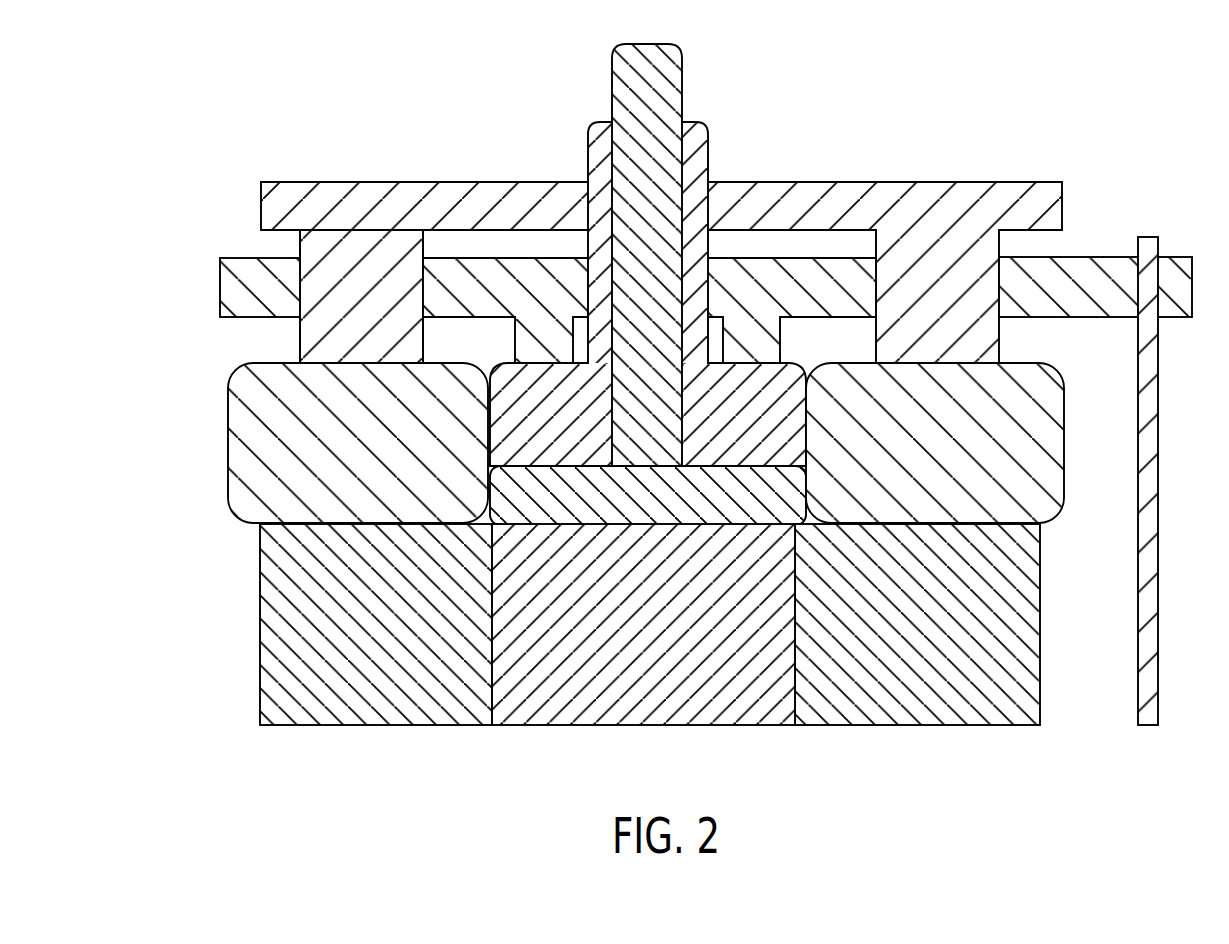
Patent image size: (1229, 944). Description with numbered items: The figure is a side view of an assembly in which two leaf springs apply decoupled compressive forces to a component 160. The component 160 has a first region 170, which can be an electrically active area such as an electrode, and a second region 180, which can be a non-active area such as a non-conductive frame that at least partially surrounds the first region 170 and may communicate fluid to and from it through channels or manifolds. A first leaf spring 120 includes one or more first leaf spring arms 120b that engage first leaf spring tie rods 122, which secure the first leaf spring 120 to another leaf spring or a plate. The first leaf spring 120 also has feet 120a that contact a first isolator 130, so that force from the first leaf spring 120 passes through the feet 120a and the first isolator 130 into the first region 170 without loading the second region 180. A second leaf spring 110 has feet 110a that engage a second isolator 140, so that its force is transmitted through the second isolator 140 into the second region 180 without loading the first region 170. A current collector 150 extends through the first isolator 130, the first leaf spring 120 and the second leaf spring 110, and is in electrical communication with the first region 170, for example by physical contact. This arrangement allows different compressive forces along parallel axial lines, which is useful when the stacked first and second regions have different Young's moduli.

The second leaf spring 110 is at (798, 200).
The feet 110a is at (312, 328).
The first leaf spring 120 is at (233, 283).
The feet 120a is at (537, 325).
The first leaf spring arms 120b is at (1097, 268).
The first leaf spring tie rods 122 is at (1148, 557).
The first isolator 130 is at (597, 150).
The second isolator 140 is at (241, 431).
The current collector 150 is at (662, 94).
The component 160 is at (579, 652).
The first region 170 is at (655, 712).
The second region 180 is at (405, 711).